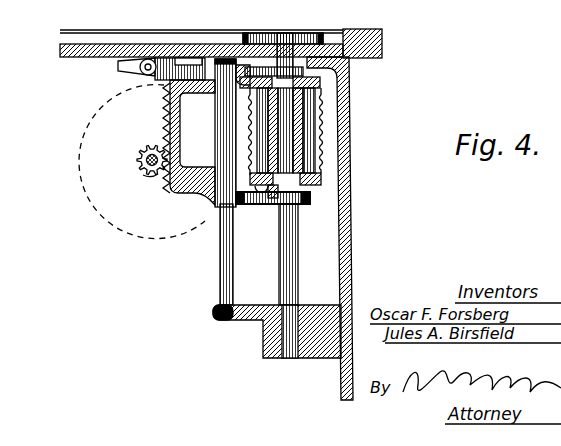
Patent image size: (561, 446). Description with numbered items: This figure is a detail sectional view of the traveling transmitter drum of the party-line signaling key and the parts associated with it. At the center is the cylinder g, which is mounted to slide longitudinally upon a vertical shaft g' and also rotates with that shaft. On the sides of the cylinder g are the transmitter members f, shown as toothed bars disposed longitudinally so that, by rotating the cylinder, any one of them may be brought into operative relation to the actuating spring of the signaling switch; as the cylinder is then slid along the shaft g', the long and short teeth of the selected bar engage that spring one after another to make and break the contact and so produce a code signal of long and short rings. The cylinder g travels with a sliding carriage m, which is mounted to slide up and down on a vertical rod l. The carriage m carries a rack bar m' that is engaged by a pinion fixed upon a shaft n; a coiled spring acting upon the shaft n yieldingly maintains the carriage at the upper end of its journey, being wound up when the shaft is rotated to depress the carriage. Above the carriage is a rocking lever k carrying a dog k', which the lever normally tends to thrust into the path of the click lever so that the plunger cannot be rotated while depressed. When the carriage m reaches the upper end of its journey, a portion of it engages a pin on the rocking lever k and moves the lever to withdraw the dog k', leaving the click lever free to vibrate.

The dog k' is at (221, 32).
The rocking lever k is at (161, 82).
The sliding carriage m is at (203, 133).
The rack bar m' is at (150, 138).
The shaft n is at (136, 156).
The transmitter members f is at (322, 123).
The cylinder g is at (280, 198).
The vertical shaft g' is at (300, 281).
The vertical rod l is at (229, 254).